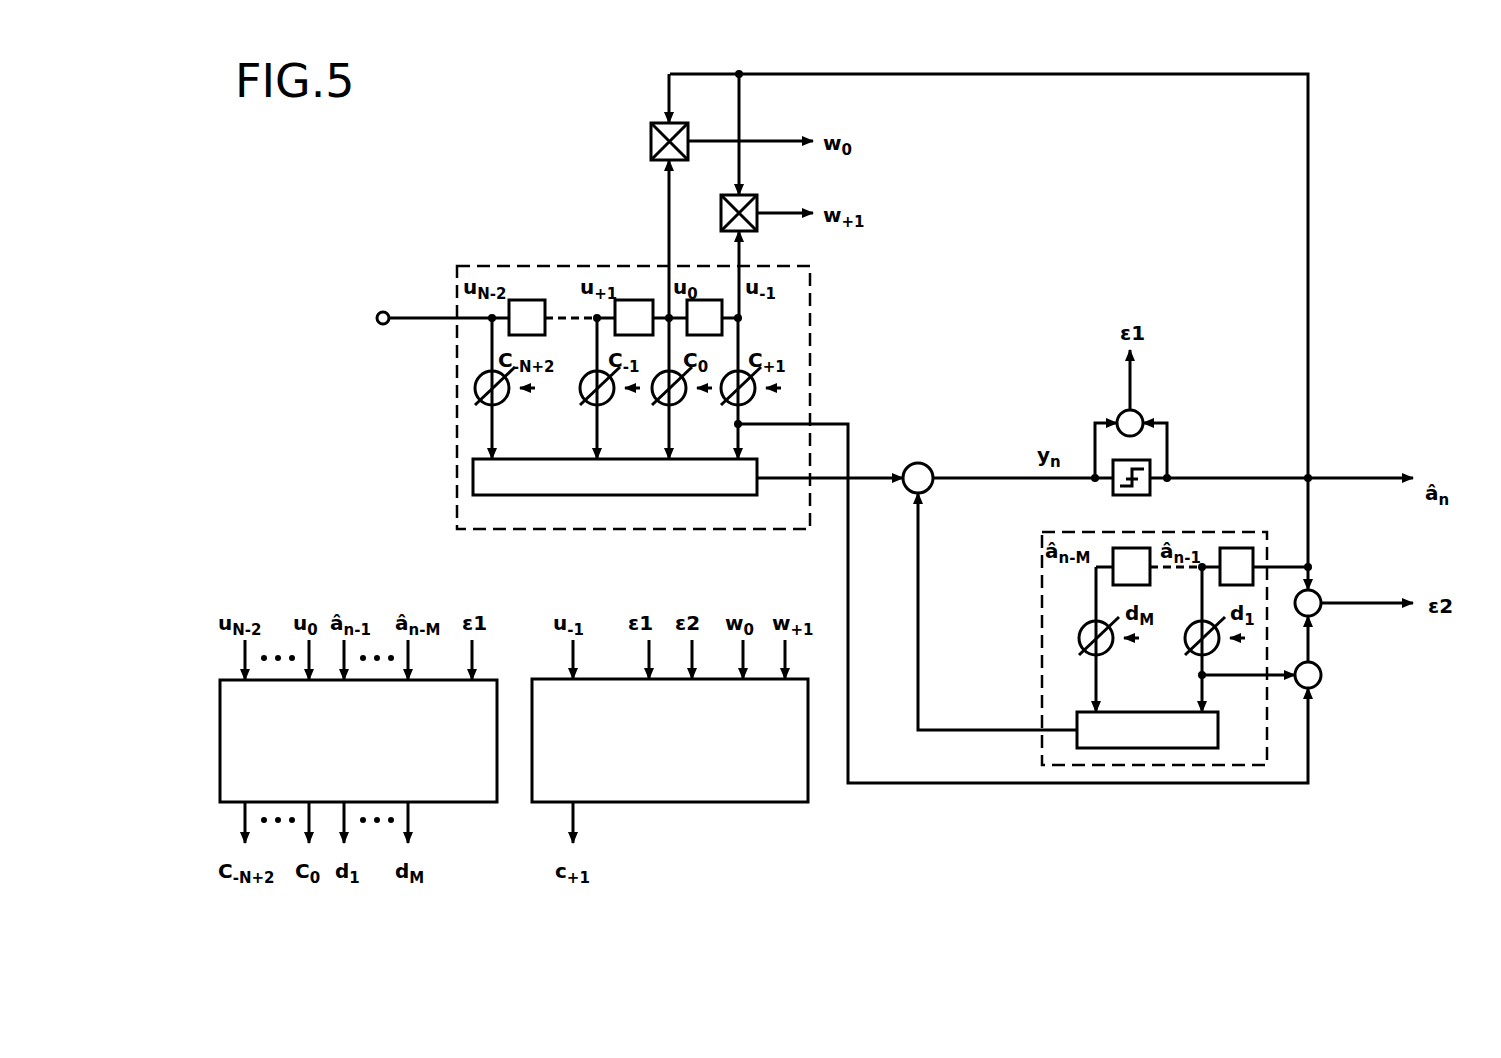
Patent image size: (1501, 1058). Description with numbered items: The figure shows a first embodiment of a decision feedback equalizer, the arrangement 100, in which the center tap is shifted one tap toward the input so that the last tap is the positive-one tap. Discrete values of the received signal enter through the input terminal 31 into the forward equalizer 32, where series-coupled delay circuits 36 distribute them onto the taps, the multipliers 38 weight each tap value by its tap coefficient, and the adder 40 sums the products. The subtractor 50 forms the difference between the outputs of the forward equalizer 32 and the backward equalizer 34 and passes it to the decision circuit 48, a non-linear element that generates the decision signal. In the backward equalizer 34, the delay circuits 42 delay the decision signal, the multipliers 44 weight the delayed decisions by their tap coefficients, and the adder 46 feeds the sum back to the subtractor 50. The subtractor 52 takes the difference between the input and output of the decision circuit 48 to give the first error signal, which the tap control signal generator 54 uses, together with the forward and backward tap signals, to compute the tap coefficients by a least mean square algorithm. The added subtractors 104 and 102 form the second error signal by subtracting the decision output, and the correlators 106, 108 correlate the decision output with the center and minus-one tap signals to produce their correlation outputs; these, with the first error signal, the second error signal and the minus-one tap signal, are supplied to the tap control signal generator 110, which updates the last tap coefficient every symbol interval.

The arrangement 100 is at (356, 202).
The input terminal 31 is at (383, 325).
The forward equalizer 32 is at (815, 326).
The delay circuits 36 is at (533, 300).
The multipliers 38 is at (505, 402).
The adder 40 is at (632, 495).
The subtractor 50 is at (927, 467).
The decision circuit 48 is at (1113, 490).
The subtractor 52 is at (1140, 414).
The backward equalizer 34 is at (1042, 648).
The delay circuits 42 is at (1135, 548).
The multipliers 44 is at (1190, 652).
The adder 46 is at (1218, 735).
The subtractor 102 is at (1320, 595).
The subtractor 104 is at (1321, 675).
The correlator 106 is at (651, 146).
The correlator 108 is at (757, 205).
The tap control signal generator 54 is at (220, 740).
The tap control signal generator 110 is at (748, 802).